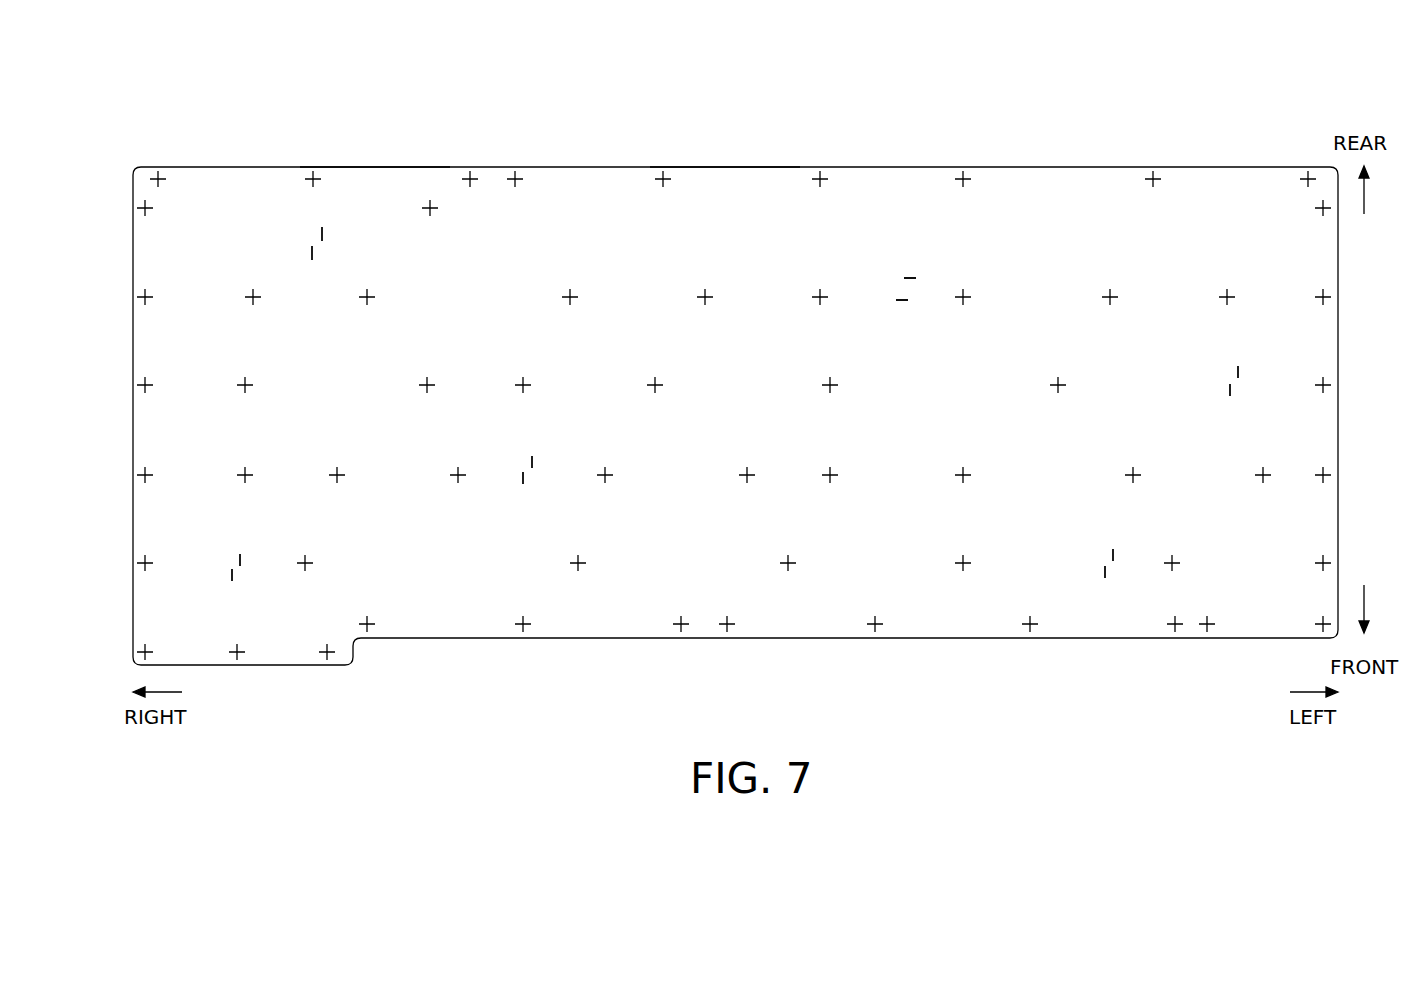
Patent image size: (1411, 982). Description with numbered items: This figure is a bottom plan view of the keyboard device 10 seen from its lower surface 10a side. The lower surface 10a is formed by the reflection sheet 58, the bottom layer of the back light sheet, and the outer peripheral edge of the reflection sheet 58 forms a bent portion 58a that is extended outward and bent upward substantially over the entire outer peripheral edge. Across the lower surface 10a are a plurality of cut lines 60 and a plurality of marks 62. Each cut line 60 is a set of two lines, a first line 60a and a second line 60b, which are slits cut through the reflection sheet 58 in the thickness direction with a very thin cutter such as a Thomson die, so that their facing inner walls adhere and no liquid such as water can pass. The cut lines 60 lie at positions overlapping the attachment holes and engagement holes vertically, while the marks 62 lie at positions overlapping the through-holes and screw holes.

The keyboard device 10 is at (176, 65).
The lower surface 10a is at (378, 192).
The reflection sheet 58 is at (593, 192).
The bent portion 58a is at (733, 167).
The cut line 60 is at (449, 218).
The first line 60a is at (322, 234).
The second line 60b is at (312, 253).
The mark 62 is at (820, 178).